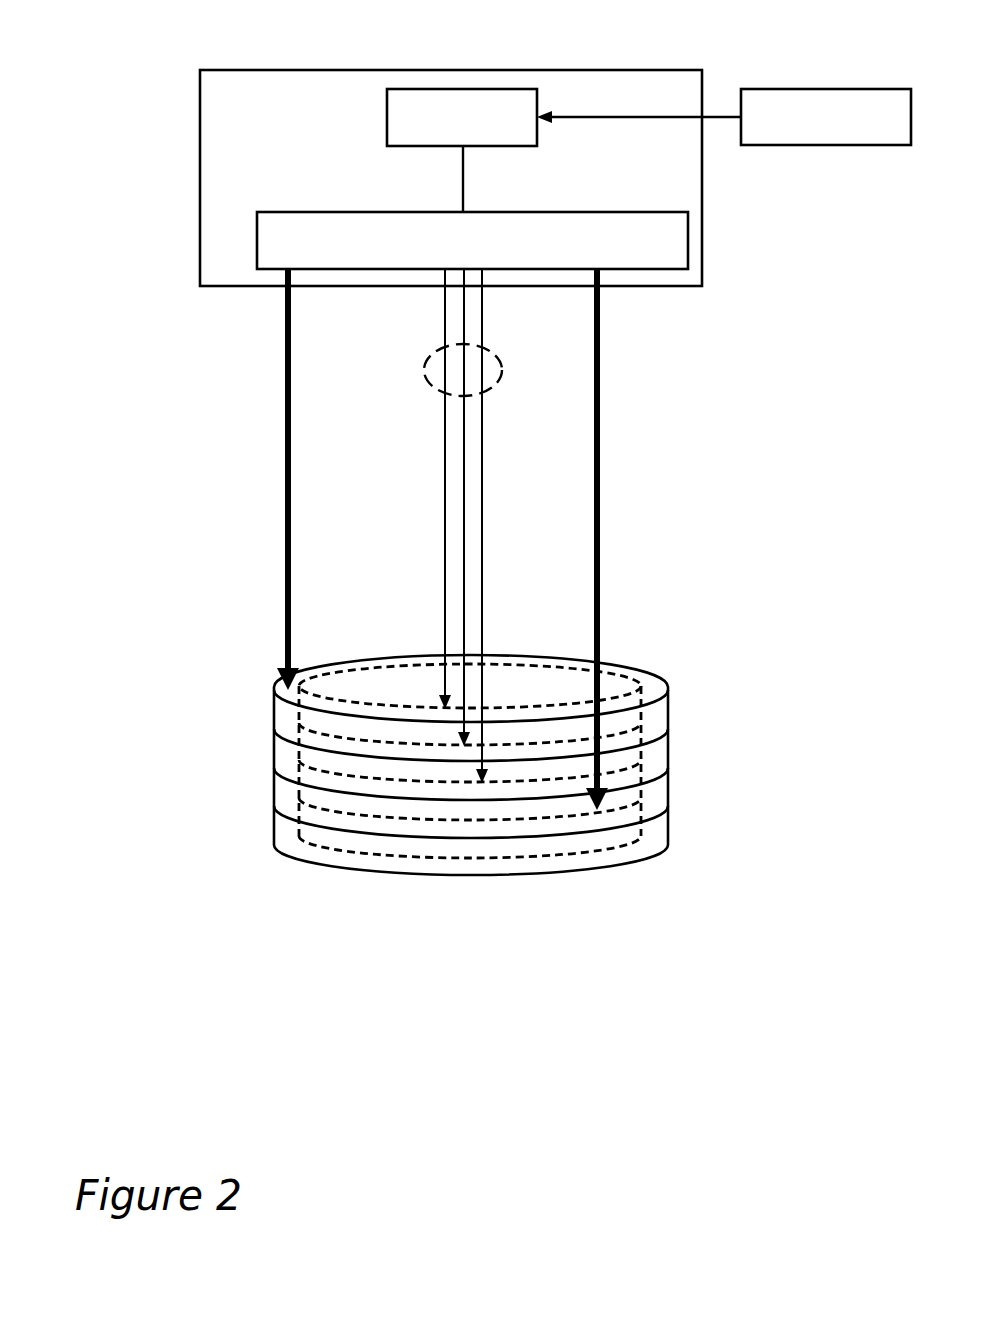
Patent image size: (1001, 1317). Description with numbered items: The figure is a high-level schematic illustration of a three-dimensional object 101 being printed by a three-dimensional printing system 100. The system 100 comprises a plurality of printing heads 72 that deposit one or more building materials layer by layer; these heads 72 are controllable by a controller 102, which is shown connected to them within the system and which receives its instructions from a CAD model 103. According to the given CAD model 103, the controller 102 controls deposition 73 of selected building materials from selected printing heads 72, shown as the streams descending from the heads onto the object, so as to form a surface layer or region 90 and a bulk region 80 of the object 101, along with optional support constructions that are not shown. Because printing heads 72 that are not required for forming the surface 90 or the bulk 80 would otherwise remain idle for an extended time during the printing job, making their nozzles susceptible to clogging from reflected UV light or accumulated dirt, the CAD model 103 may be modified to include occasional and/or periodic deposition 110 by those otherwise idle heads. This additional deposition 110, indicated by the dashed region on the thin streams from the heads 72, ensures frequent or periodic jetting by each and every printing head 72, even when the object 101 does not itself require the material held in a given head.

The 3D-printing system 100 is at (200, 140).
The controller 102 is at (458, 89).
The CAD model 103 is at (824, 89).
The printing heads 72 is at (257, 242).
The deposition 73 is at (288, 390).
The occasional and/or periodic deposition 110 is at (425, 370).
The 3D object 101 is at (399, 726).
The bulk region 80 is at (388, 685).
The surface layer or region 90 is at (557, 656).